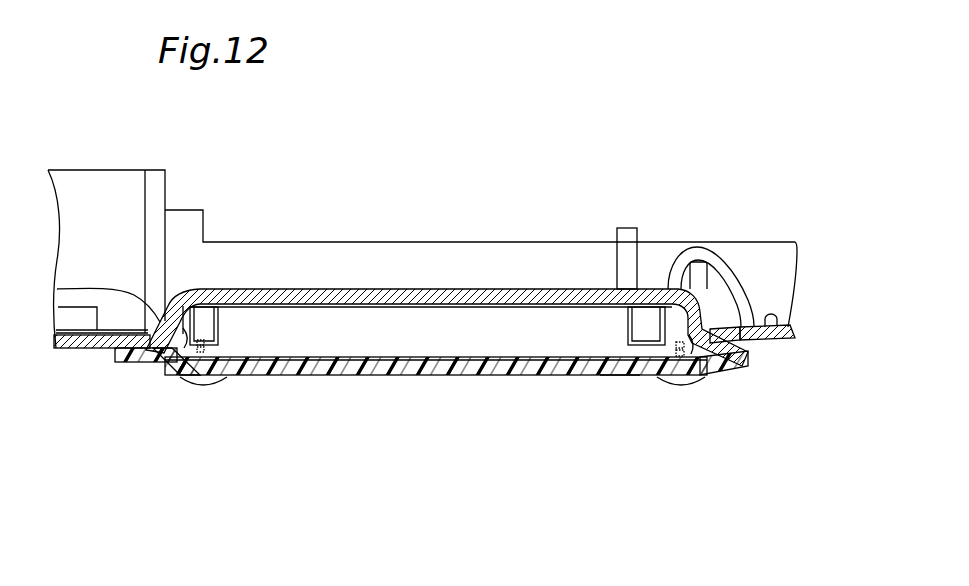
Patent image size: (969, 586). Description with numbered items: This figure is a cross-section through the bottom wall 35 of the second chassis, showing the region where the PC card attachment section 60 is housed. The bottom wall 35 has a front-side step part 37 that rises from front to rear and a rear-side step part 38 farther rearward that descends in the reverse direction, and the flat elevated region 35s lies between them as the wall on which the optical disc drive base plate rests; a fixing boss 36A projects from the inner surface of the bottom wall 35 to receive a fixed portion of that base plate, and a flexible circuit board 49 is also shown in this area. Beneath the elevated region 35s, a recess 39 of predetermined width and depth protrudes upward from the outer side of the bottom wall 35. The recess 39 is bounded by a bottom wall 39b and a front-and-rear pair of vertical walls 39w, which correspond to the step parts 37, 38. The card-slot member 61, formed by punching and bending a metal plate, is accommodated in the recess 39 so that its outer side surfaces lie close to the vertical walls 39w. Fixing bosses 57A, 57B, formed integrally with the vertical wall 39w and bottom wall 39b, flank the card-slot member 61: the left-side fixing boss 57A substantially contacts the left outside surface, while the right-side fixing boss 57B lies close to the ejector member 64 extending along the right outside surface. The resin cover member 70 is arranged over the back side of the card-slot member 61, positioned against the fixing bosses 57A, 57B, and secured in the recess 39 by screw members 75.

The bottom wall 35 is at (777, 343).
The elevated region 35s is at (542, 288).
The fixing boss 36A is at (628, 228).
The front-side step part 37 is at (712, 303).
The rear-side step part 38 is at (58, 290).
The recess 39 is at (349, 329).
The bottom wall of the recess 39b is at (466, 300).
The vertical wall 39w is at (165, 355).
The flexible circuit board 49 is at (727, 262).
The fixing boss 57A is at (220, 334).
The fixing boss 57B is at (640, 348).
The PC card attachment section 60 is at (349, 342).
The card-slot member 61 is at (391, 352).
The ejector member 64 is at (630, 372).
The cover member 70 is at (437, 367).
The screw member 75 is at (203, 389).